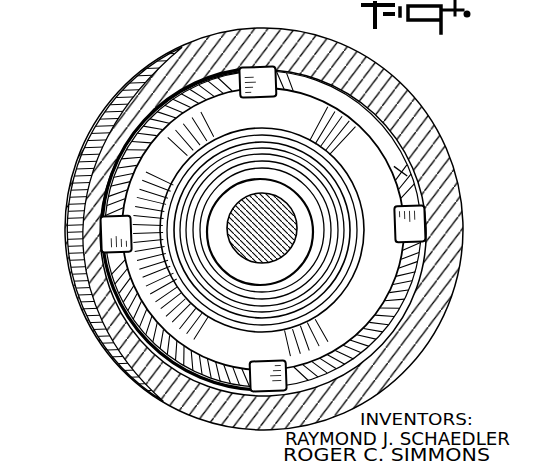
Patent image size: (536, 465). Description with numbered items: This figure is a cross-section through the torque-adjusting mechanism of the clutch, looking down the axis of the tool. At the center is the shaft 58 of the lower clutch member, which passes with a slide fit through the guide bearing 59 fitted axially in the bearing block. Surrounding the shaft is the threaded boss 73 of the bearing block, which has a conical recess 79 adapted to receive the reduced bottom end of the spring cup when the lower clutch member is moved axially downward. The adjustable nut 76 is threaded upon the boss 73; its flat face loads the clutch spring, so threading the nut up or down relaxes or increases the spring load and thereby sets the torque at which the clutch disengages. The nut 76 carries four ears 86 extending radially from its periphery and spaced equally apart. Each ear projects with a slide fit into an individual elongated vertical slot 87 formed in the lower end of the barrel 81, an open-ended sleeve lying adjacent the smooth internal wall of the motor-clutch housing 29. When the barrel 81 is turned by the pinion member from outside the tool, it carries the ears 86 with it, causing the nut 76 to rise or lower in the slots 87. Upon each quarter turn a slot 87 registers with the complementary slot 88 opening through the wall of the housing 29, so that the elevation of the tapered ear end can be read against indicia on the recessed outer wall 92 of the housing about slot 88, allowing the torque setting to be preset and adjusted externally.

The motor-clutch housing 29 is at (126, 96).
The recessed outer wall 92 is at (74, 160).
The barrel 81 is at (195, 82).
The vertical slot 87 is at (259, 66).
The adjustable nut 76 is at (340, 124).
The ears 86 is at (272, 66).
The slot 88 is at (103, 230).
The threaded boss 73 is at (330, 171).
The conical recess 79 is at (332, 204).
The guide bearing 59 is at (298, 272).
The shaft 58 is at (270, 262).